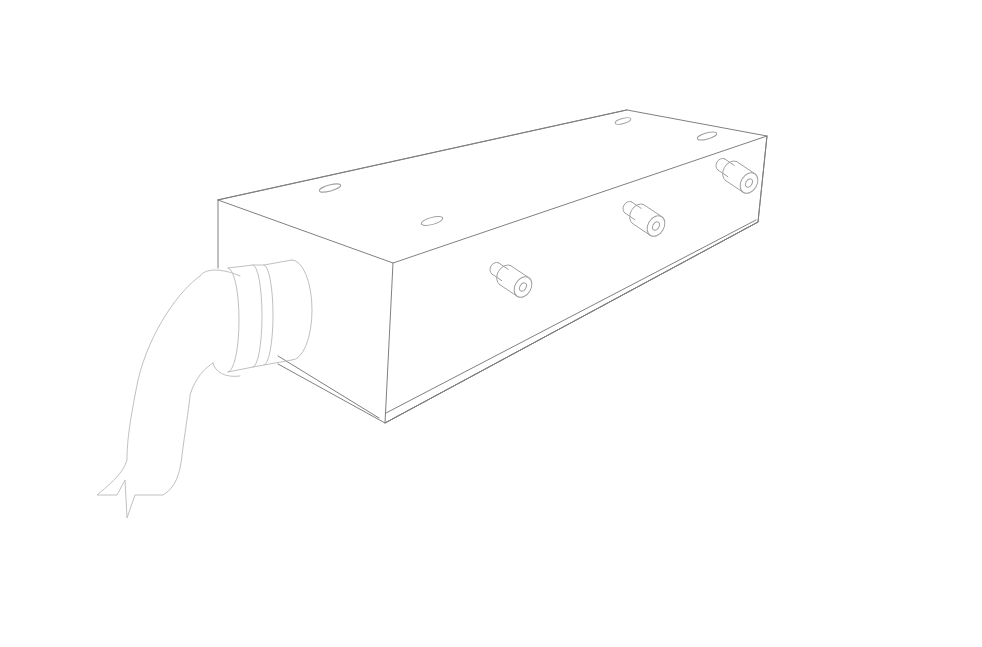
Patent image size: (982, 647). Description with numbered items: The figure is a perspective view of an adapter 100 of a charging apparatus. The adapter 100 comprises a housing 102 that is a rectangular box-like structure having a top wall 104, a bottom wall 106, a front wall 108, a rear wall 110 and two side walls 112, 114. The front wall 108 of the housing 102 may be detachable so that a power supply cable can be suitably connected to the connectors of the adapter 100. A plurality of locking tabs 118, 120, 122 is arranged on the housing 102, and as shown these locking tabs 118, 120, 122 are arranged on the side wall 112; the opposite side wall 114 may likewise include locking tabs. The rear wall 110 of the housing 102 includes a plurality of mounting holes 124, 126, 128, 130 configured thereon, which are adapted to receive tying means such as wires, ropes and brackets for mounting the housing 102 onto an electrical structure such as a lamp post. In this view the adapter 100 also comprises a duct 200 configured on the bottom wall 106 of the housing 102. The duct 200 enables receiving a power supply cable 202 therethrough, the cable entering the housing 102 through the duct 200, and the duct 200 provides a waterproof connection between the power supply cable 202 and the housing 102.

The adapter 100 is at (450, 301).
The housing 102 is at (537, 232).
The top wall 104 is at (807, 202).
The bottom wall 106 is at (505, 321).
The front wall 108 is at (571, 322).
The rear wall 110 is at (492, 167).
The side wall 112 is at (576, 279).
The side wall 114 is at (422, 121).
The locking tab 118 is at (496, 338).
The locking tab 120 is at (630, 271).
The locking tab 122 is at (781, 168).
The mounting hole 124 is at (297, 157).
The mounting hole 126 is at (400, 157).
The mounting hole 128 is at (751, 115).
The mounting hole 130 is at (592, 87).
The duct 200 is at (216, 288).
The power supply cable 202 is at (142, 394).